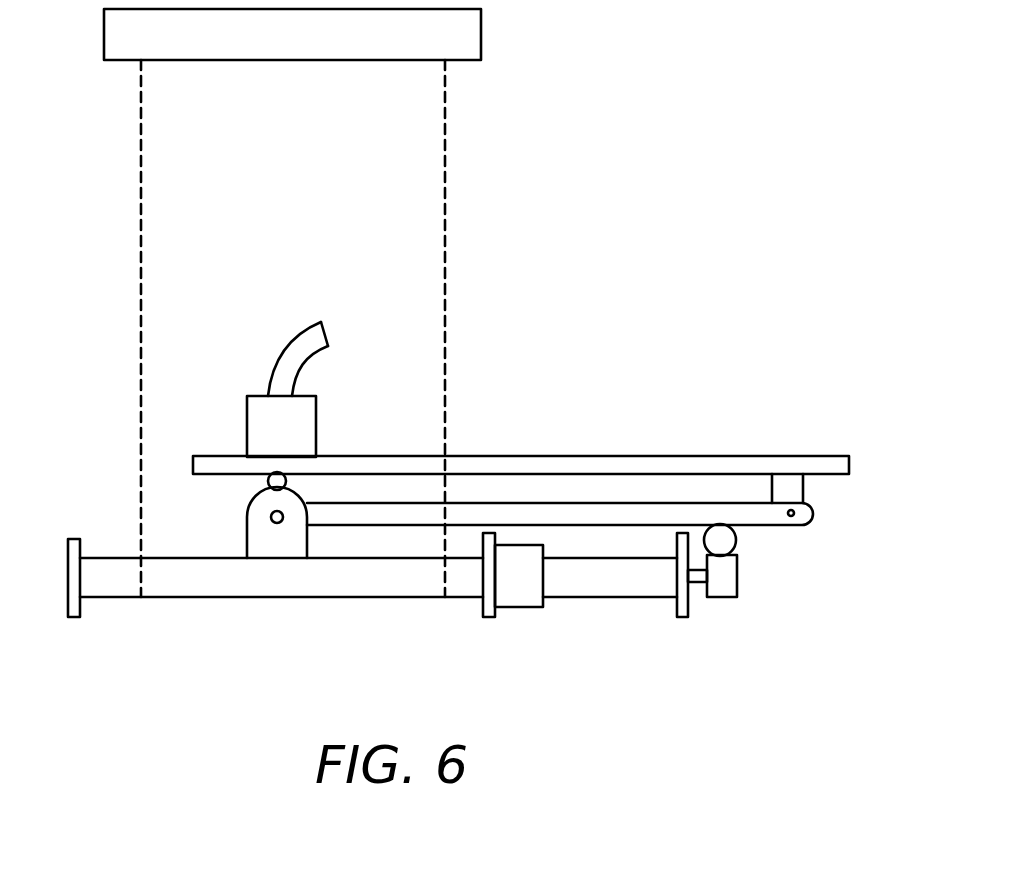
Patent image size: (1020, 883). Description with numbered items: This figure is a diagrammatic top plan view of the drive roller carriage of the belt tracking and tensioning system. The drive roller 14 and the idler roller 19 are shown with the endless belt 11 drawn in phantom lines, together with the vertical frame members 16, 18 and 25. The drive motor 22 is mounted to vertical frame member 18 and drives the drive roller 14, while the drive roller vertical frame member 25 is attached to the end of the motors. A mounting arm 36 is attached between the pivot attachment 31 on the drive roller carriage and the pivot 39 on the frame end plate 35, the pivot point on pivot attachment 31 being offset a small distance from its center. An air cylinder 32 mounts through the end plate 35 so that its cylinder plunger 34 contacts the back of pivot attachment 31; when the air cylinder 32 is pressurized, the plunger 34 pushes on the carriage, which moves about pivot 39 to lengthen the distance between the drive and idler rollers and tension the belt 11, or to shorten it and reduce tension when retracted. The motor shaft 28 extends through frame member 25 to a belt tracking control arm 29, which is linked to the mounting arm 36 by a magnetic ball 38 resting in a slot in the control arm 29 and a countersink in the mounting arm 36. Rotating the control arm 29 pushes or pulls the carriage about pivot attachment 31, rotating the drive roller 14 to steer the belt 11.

The endless belt 11 is at (416, 151).
The drive roller 14 is at (270, 583).
The vertical frame member 16 is at (68, 617).
The vertical frame member 18 is at (490, 617).
The idler roller 19 is at (118, 42).
The drive motor 22 is at (565, 583).
The drive roller vertical frame member 25 is at (683, 617).
The motor shaft 28 is at (693, 583).
The belt tracking control arm 29 is at (728, 590).
The pivot attachment 31 is at (270, 519).
The air cylinder 32 is at (262, 408).
The cylinder plunger 34 is at (258, 494).
The frame end plate 35 is at (743, 455).
The mounting arm 36 is at (463, 512).
The magnetic ball 38 is at (737, 543).
The pivot 39 is at (797, 513).